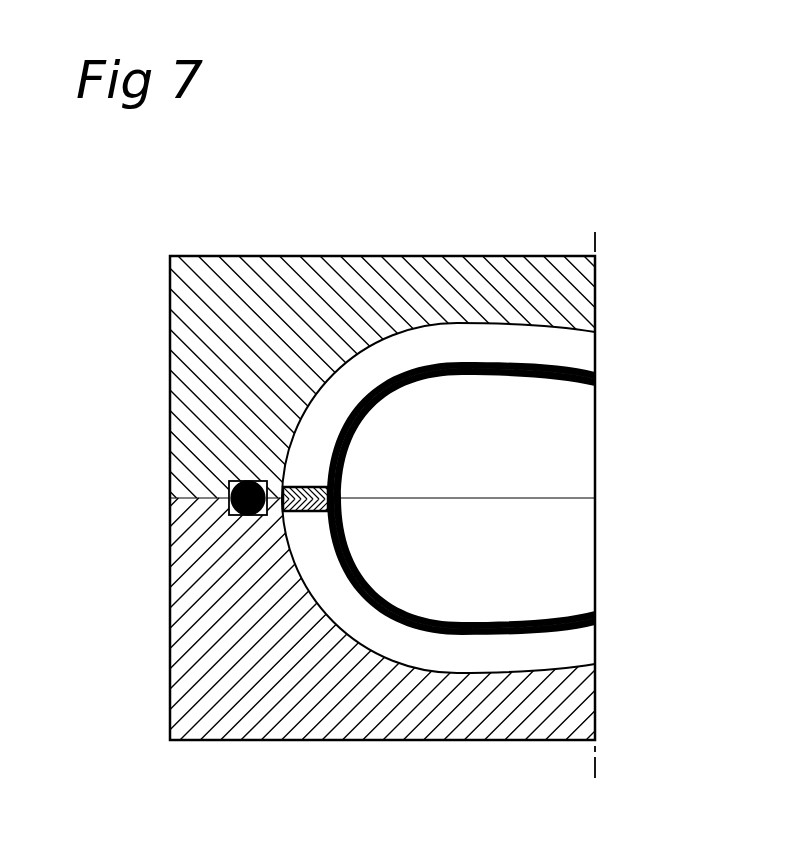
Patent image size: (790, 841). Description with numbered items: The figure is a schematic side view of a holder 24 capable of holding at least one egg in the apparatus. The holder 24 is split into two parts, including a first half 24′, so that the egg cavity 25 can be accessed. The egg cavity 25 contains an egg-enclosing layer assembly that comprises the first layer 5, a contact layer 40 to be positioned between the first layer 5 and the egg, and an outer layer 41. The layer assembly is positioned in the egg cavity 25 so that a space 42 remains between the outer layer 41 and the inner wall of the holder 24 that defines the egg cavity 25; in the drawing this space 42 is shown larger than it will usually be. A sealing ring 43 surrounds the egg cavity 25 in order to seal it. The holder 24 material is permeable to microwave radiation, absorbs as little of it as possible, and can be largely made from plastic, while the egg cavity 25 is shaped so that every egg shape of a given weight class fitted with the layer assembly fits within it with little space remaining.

The holder 24 is at (192, 339).
The first half 24′ is at (287, 290).
The sealing ring 43 is at (229, 493).
The egg cavity 25 is at (515, 525).
The first layer 5 is at (590, 386).
The outer layer 41 is at (570, 372).
The contact layer 40 is at (565, 384).
The space 42 is at (552, 652).